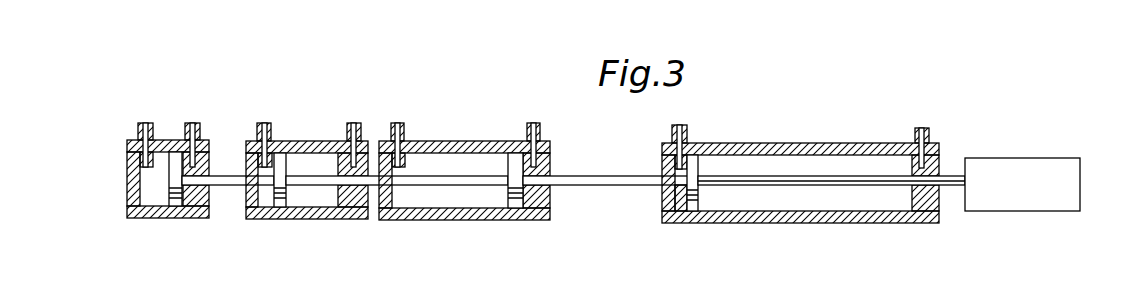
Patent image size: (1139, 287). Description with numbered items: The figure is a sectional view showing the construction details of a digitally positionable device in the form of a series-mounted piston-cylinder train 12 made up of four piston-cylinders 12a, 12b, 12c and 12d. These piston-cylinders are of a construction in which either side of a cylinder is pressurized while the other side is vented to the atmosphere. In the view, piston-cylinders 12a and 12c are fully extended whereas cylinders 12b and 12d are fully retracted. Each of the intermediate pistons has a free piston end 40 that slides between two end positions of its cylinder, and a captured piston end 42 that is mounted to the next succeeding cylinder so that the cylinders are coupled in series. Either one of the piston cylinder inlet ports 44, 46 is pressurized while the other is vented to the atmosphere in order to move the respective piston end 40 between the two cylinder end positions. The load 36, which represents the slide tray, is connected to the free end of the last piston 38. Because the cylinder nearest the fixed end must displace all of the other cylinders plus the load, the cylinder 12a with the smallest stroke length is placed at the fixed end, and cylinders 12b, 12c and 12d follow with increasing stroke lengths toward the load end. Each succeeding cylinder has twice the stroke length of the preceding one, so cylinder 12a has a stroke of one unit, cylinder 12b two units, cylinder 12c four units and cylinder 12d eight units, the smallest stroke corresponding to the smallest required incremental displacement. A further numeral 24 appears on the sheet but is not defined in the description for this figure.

The piston-cylinder train 12 is at (533, 177).
The piston-cylinder 12a is at (163, 219).
The piston-cylinder 12b is at (313, 220).
The piston-cylinder 12c is at (474, 177).
The piston-cylinder 12d is at (772, 184).
The free piston end 40 is at (508, 188).
The piston cylinder inlet port 44 is at (401, 123).
The piston cylinder inlet port 46 is at (535, 123).
The captured piston end 42 is at (662, 160).
The last piston 38 is at (950, 178).
The load 36 is at (1045, 165).
The line 24 is at (451, 282).